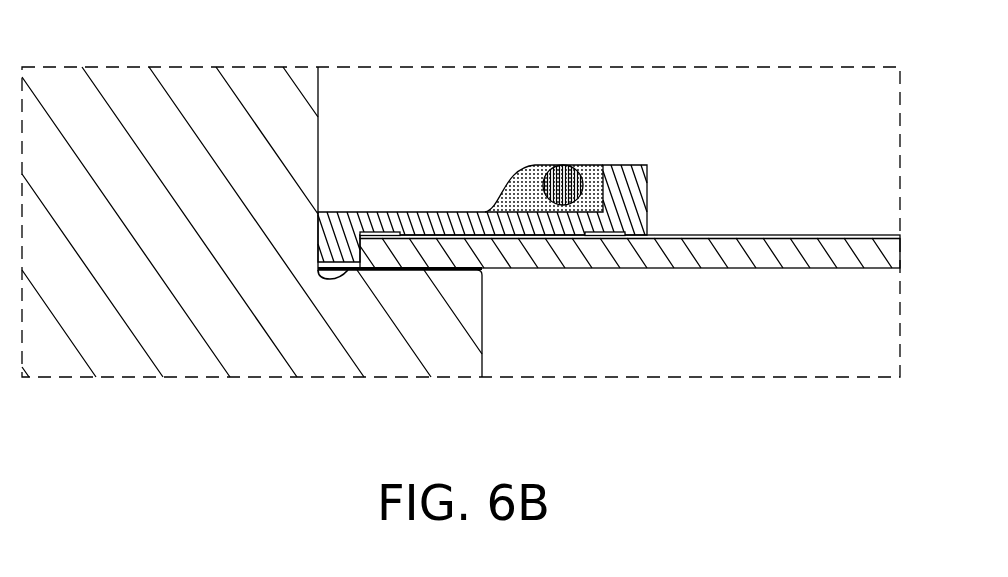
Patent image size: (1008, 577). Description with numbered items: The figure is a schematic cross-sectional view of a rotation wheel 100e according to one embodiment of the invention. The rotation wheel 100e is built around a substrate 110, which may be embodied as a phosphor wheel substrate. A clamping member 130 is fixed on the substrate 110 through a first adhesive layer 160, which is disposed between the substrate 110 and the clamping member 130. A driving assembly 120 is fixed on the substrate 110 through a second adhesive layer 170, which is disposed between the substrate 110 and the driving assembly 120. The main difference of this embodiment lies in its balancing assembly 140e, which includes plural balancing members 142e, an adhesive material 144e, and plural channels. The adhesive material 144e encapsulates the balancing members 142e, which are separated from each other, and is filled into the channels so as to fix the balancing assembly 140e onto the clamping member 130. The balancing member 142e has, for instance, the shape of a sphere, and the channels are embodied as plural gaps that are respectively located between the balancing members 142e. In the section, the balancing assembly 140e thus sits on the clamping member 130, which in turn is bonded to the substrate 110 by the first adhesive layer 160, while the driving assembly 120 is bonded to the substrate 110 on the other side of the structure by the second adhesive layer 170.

The rotation wheel 100e is at (785, 453).
The substrate 110 is at (659, 256).
The driving assembly 120 is at (288, 357).
The clamping member 130 is at (634, 200).
The balancing assembly 140e is at (503, 186).
The balancing member 142e is at (560, 183).
The adhesive material 144e is at (525, 183).
The first adhesive layer 160 is at (568, 242).
The second adhesive layer 170 is at (482, 272).